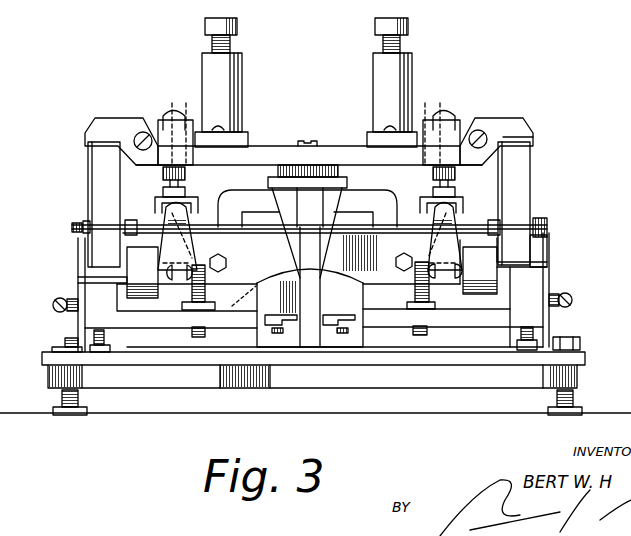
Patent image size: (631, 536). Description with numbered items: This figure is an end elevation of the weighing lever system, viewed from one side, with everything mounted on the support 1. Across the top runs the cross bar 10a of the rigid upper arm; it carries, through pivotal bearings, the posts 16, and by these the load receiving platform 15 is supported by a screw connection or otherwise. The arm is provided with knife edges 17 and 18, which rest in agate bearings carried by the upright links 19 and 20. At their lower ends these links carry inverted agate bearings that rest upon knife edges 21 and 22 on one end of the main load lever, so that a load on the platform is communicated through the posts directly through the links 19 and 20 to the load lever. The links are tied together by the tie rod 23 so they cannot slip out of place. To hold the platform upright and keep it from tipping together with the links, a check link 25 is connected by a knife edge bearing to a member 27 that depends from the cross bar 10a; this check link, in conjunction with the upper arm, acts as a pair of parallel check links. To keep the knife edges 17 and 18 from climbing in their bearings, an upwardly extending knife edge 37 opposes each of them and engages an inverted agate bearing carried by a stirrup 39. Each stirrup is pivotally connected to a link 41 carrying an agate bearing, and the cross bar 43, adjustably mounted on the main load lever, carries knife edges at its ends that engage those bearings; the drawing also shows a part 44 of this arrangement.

The support 1 is at (157, 378).
The cross bar 10a is at (253, 152).
The load receiving platform 15 is at (253, 227).
The posts 16 is at (207, 72).
The knife edge 17 is at (100, 128).
The knife edge 18 is at (515, 128).
The upright link 19 is at (107, 177).
The upright link 20 is at (523, 165).
The knife edge 21 is at (82, 267).
The knife edge 22 is at (547, 265).
The tie rod 23 is at (472, 220).
The check link 25 is at (294, 332).
The member 27 is at (316, 327).
The knife edge 37 is at (173, 140).
The stirrup 39 is at (165, 115).
The link 41 is at (158, 248).
The cross bar 43 is at (380, 273).
The hex nut stud 44 is at (413, 263).